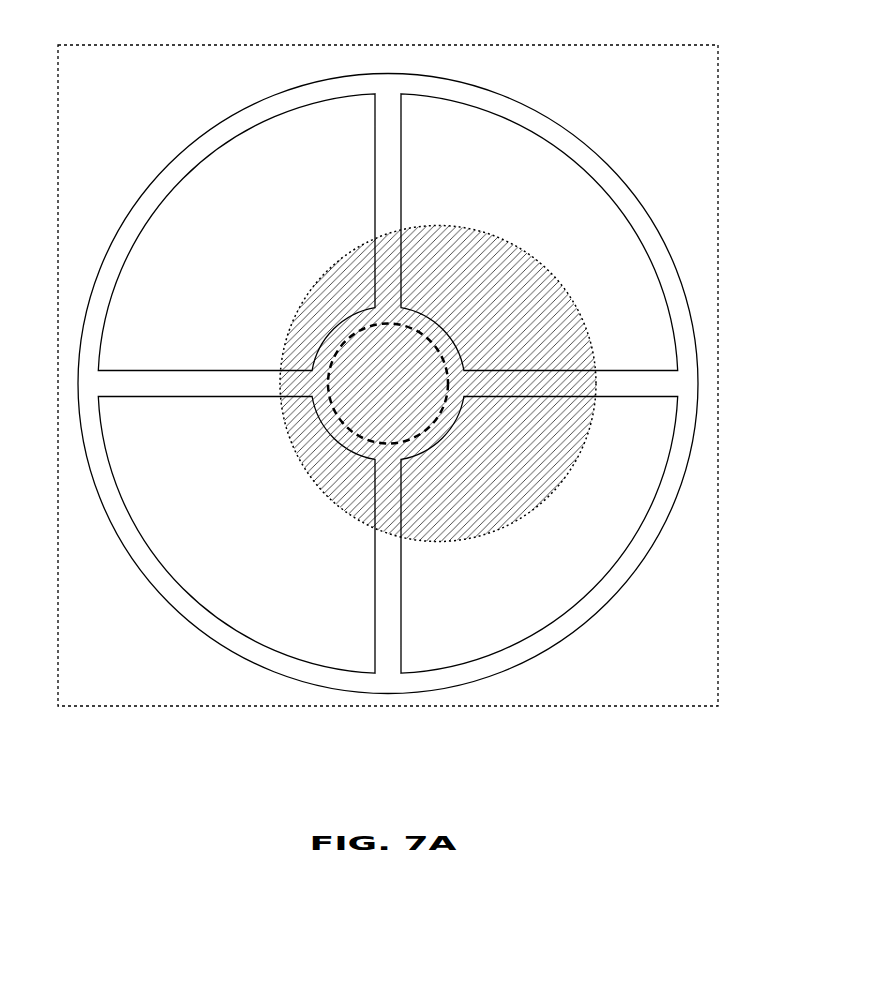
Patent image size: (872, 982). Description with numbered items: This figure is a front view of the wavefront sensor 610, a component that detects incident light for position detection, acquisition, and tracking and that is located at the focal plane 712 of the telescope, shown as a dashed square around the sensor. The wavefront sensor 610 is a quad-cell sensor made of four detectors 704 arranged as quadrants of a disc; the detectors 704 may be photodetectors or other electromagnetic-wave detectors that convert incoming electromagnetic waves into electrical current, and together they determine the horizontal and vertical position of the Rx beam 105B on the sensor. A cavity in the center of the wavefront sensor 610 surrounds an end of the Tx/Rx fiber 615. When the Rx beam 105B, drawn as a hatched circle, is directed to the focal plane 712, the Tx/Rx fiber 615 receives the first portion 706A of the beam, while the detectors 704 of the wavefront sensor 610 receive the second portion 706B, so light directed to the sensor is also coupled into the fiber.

The detectors 704 is at (520, 605).
The Tx/Rx fiber 615 is at (363, 325).
The first portion 706A is at (357, 410).
The second portion 706B is at (517, 440).
The Rx beam 105B is at (550, 268).
The wavefront sensor 610 is at (698, 380).
The focal plane 712 is at (718, 685).